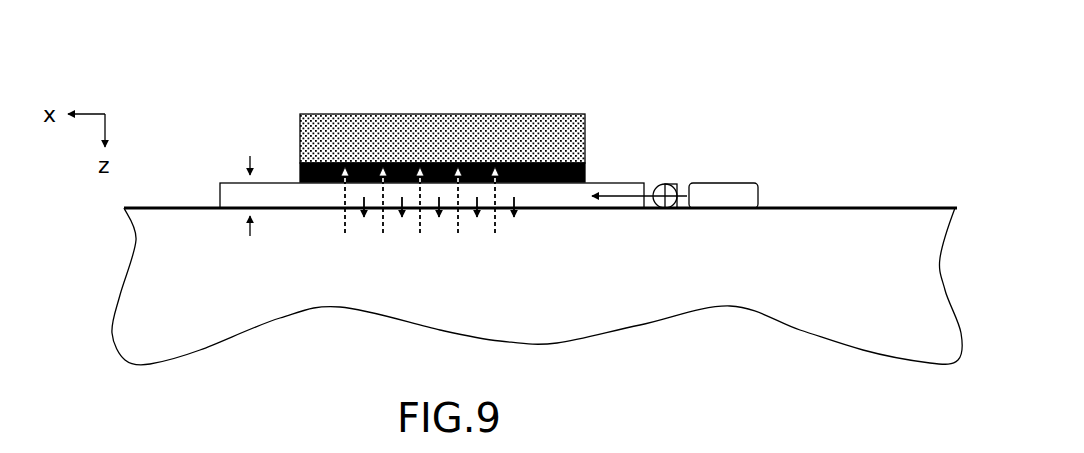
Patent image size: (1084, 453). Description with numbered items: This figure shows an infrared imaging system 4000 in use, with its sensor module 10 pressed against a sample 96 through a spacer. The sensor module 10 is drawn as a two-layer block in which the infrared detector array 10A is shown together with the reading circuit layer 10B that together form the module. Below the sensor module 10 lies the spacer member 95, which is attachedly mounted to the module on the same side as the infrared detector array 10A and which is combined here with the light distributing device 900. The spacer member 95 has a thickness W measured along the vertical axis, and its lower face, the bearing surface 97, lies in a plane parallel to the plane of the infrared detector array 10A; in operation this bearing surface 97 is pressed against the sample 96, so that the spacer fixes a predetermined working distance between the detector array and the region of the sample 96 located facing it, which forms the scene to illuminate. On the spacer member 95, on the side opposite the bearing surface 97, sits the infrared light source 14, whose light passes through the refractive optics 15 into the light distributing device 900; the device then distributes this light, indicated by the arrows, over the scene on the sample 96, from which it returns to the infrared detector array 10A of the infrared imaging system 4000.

The infrared imaging system 4000 is at (672, 77).
The sensor module 10 is at (297, 182).
The infrared detector array 10A is at (327, 175).
The piezoelectric layer 10B is at (315, 123).
The light distributing device 900 is at (615, 187).
The spacer member 95 is at (432, 195).
The refractive optics 15 is at (662, 190).
The infrared light source 14 is at (725, 189).
The sample 96 is at (848, 222).
The bearing surface 97 is at (555, 208).